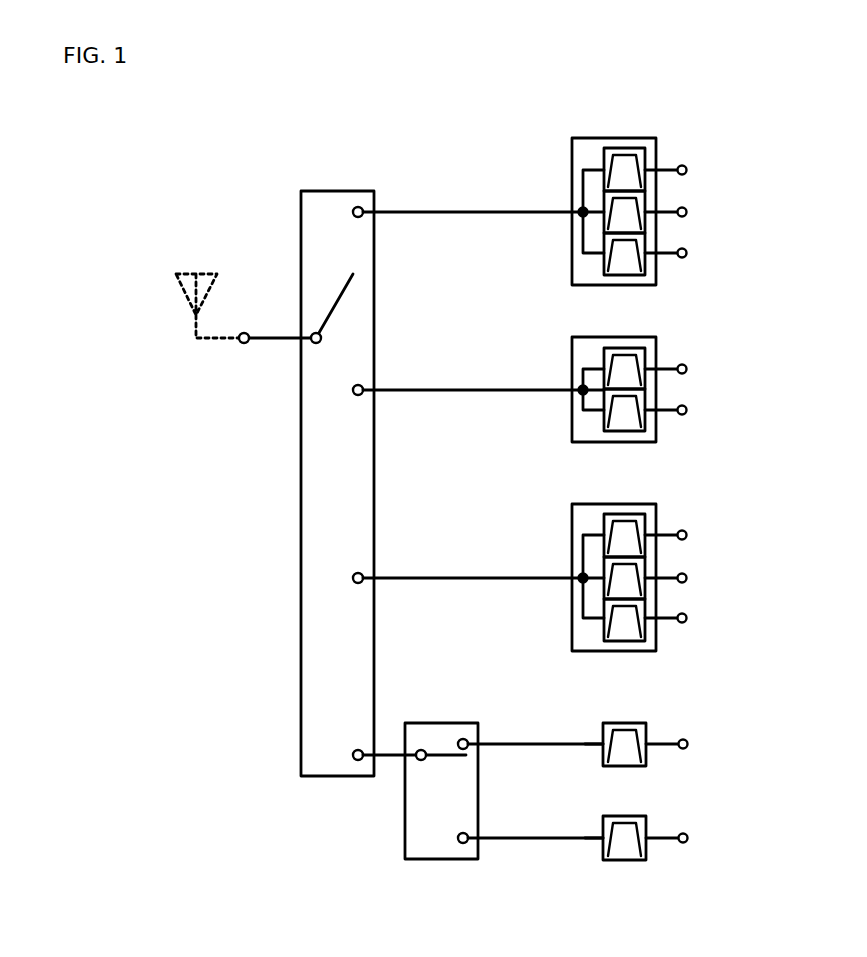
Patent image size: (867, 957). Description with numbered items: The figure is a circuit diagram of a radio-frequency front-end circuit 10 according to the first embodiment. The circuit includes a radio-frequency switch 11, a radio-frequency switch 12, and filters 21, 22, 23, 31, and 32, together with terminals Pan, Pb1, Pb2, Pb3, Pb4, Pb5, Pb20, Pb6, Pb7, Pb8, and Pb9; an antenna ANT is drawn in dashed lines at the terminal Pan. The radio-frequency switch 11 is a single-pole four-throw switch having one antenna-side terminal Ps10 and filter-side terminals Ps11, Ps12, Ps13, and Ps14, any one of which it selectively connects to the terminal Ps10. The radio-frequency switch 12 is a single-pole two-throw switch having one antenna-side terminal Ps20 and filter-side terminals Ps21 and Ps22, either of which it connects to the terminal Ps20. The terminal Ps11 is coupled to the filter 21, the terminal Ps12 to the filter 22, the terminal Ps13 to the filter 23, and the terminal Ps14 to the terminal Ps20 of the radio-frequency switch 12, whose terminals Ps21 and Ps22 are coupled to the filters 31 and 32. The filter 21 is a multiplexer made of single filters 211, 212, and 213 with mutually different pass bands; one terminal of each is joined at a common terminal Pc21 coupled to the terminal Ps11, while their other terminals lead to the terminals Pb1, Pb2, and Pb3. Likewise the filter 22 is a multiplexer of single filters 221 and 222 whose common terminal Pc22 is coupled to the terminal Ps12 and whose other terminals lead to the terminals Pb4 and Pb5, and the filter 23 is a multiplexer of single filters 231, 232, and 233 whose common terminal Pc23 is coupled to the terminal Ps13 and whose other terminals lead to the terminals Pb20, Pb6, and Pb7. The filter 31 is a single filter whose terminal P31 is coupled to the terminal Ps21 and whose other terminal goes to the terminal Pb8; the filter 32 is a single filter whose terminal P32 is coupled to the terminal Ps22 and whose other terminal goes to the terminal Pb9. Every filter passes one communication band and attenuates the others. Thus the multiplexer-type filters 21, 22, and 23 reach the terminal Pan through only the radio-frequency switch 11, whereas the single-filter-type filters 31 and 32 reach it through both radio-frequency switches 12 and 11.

The radio-frequency front-end circuit 10 is at (653, 71).
The radio-frequency switch 11 is at (355, 190).
The radio-frequency switch 12 is at (452, 723).
The filter 21 is at (636, 138).
The filter 22 is at (636, 337).
The filter 23 is at (636, 504).
The filter 31 is at (625, 723).
The filter 32 is at (625, 816).
The filter 211 is at (647, 153).
The filter 212 is at (647, 222).
The filter 213 is at (647, 270).
The filter 221 is at (647, 353).
The filter 222 is at (647, 426).
The filter 231 is at (647, 519).
The filter 232 is at (647, 588).
The filter 233 is at (647, 635).
The antenna ANT is at (221, 266).
The terminal Pan is at (241, 344).
The antenna-side terminal Ps10 is at (312, 333).
The filter-side terminal Ps11 is at (362, 217).
The filter-side terminal Ps12 is at (362, 395).
The filter-side terminal Ps13 is at (362, 583).
The filter-side terminal Ps14 is at (361, 749).
The antenna-side terminal Ps20 is at (418, 762).
The filter-side terminal Ps21 is at (467, 741).
The filter-side terminal Ps22 is at (467, 835).
The common terminal Pc21 is at (579, 215).
The common terminal Pc22 is at (579, 393).
The common terminal Pc23 is at (579, 581).
The terminal P31 is at (601, 746).
The terminal P32 is at (601, 840).
The terminal Pb1 is at (688, 170).
The terminal Pb2 is at (688, 212).
The terminal Pb3 is at (688, 253).
The terminal Pb4 is at (688, 369).
The terminal Pb5 is at (688, 410).
The terminal Pb6 is at (688, 578).
The terminal Pb7 is at (688, 618).
The terminal Pb8 is at (689, 744).
The terminal Pb9 is at (689, 838).
The terminal Pb20 is at (688, 535).